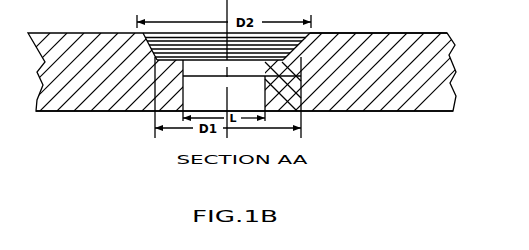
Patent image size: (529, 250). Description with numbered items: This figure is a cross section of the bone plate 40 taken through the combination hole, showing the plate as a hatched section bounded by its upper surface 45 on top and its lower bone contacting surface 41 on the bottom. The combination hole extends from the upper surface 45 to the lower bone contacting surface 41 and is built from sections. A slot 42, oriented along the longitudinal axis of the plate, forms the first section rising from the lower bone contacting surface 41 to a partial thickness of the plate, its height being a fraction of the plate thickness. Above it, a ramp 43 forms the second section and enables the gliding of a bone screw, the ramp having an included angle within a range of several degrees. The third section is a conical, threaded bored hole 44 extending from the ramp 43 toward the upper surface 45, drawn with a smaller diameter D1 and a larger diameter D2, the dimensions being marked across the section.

The bone plate 40 is at (246, 72).
The lower bone contacting surface 41 is at (269, 136).
The slot 42 is at (143, 119).
The ramp 43 is at (310, 130).
The conical, threaded bored hole 44 is at (174, 30).
The upper surface 45 is at (405, 17).